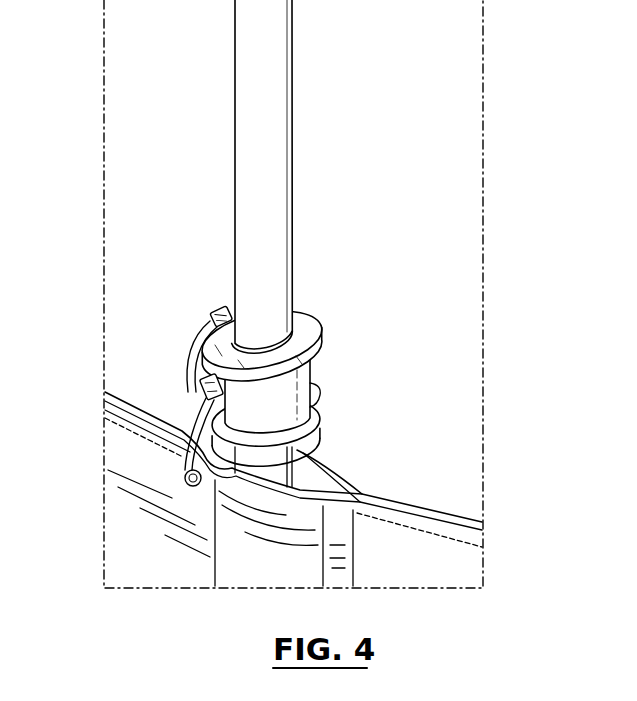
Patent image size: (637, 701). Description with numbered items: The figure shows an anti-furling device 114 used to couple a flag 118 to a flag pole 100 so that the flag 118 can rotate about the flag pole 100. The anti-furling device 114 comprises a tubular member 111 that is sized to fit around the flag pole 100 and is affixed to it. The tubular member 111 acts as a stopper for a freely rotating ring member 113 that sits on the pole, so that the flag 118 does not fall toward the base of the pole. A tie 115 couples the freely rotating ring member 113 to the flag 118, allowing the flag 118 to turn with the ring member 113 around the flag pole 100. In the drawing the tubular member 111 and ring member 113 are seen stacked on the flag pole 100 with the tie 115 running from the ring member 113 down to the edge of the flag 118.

The flag pole 100 is at (384, 243).
The tubular member 111 is at (282, 415).
The freely rotating ring member 113 is at (303, 318).
The anti-furling device 114 is at (384, 384).
The tie 115 is at (192, 355).
The flag 118 is at (393, 537).